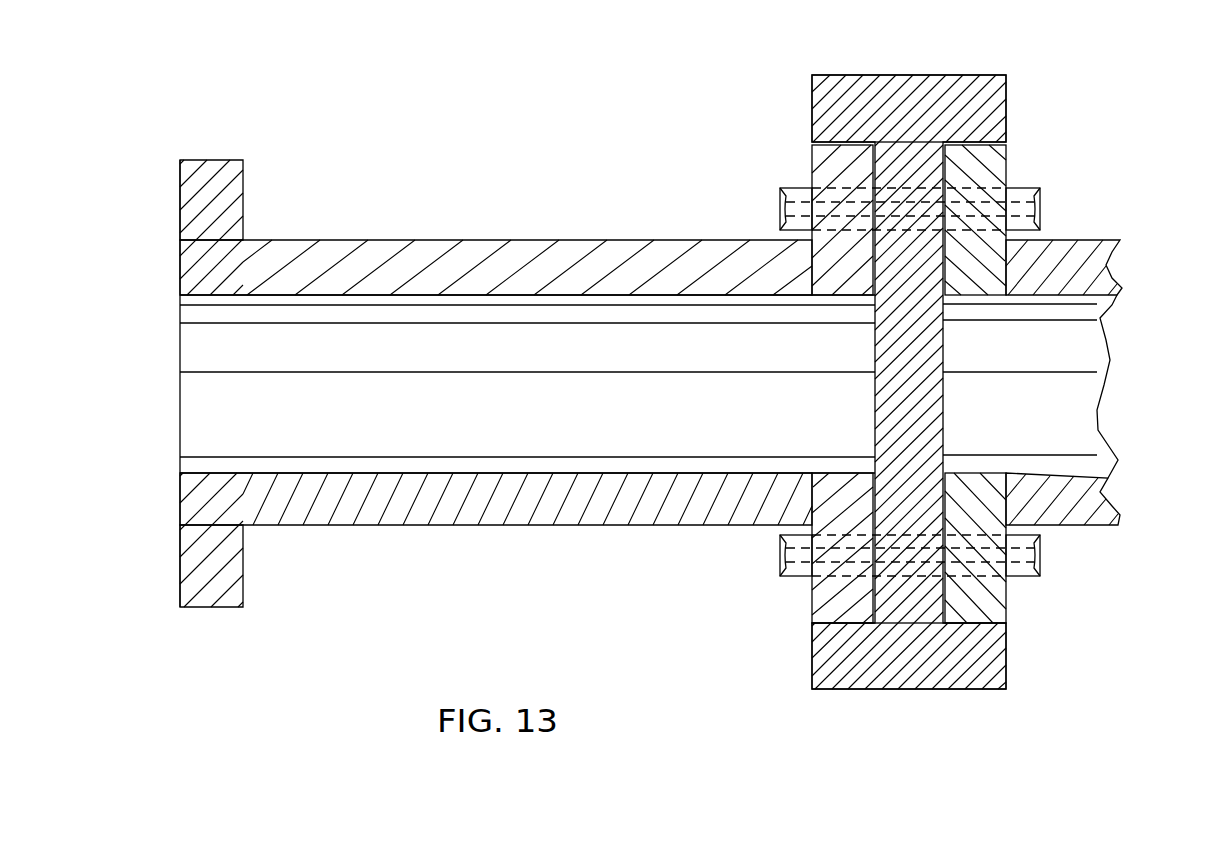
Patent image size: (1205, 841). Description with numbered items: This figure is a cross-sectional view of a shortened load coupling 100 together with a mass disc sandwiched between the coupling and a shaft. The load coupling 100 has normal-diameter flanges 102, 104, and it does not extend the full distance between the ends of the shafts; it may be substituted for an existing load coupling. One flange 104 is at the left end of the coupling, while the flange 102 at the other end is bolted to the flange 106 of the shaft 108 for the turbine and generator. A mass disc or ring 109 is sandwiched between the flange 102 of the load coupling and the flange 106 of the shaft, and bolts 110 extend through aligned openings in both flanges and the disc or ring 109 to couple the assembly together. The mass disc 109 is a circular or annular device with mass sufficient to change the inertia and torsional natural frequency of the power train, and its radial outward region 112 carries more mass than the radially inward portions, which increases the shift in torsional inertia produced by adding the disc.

The load coupling 100 is at (420, 245).
The flange 102 is at (812, 167).
The flange 104 is at (180, 565).
The flange 106 is at (1003, 170).
The shaft 108 is at (1097, 290).
The mass disc 109 is at (914, 78).
The bolts 110 is at (1040, 210).
The radial outward region 112 is at (812, 105).